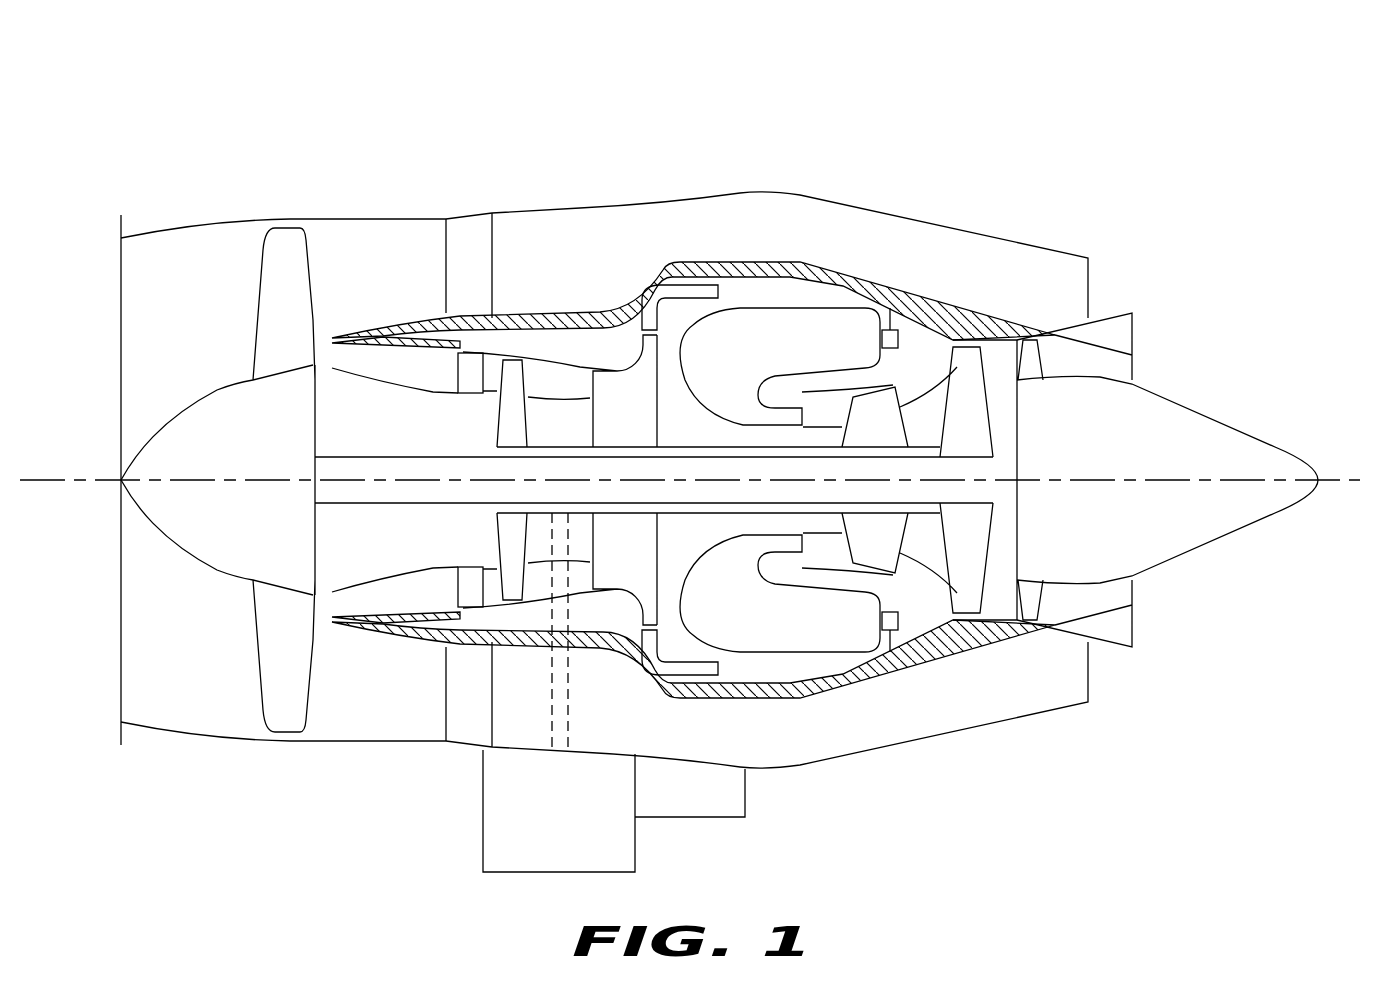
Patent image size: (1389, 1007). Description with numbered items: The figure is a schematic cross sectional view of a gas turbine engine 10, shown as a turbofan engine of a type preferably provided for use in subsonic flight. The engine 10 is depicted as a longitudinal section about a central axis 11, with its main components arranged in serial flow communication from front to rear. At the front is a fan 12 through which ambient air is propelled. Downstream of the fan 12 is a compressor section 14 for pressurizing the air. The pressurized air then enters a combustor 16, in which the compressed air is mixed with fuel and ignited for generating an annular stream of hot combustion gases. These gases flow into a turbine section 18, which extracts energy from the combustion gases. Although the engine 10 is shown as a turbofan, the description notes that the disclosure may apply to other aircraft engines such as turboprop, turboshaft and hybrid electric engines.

The gas turbine engine 10 is at (966, 175).
The engine central longitudinal axis 11 is at (1358, 480).
The fan 12 is at (272, 662).
The compressor section 14 is at (548, 372).
The combustor 16 is at (782, 328).
The turbine section 18 is at (922, 552).